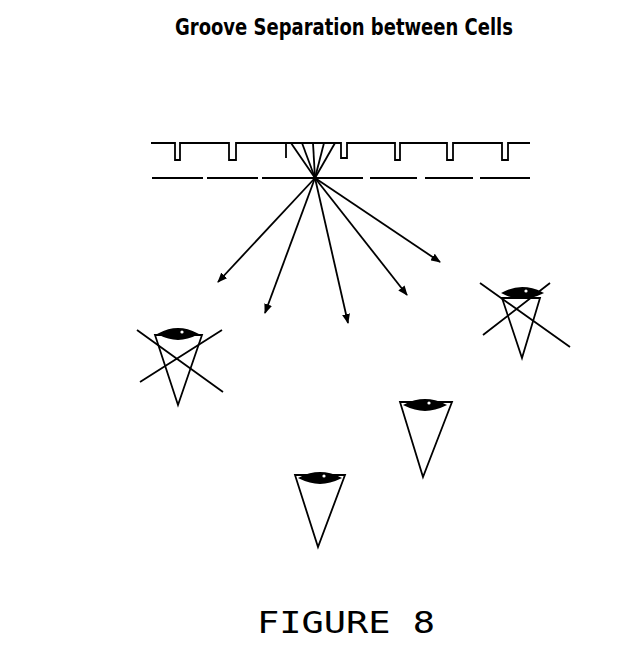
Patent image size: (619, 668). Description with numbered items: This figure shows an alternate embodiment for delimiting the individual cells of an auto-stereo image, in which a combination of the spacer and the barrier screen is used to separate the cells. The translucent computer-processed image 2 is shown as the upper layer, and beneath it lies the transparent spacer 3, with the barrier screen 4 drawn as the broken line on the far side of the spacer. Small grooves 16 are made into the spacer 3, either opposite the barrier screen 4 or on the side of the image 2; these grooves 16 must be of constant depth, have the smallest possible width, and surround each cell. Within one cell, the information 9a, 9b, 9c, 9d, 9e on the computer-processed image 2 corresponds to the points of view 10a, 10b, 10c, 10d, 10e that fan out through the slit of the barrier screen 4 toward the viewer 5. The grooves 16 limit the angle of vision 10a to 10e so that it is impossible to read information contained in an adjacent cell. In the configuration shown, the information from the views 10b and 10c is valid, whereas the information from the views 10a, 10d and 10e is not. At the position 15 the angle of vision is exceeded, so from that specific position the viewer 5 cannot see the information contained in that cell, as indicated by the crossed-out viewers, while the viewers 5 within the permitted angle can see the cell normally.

The computer-processed image 2 is at (146, 141).
The spacer 3 is at (148, 161).
The barrier screen 4 is at (147, 178).
The viewer 5 is at (398, 418).
The information 9a is at (344, 144).
The information 9b is at (331, 144).
The information 9c is at (303, 144).
The information 9d is at (288, 144).
The information 9e is at (273, 144).
The point of view 10a is at (254, 242).
The point of view 10b is at (282, 260).
The point of view 10c is at (342, 266).
The point of view 10d is at (375, 251).
The point of view 10e is at (393, 233).
The position where the angle of vision is exceeded 15 is at (213, 357).
The grooves 16 is at (510, 155).